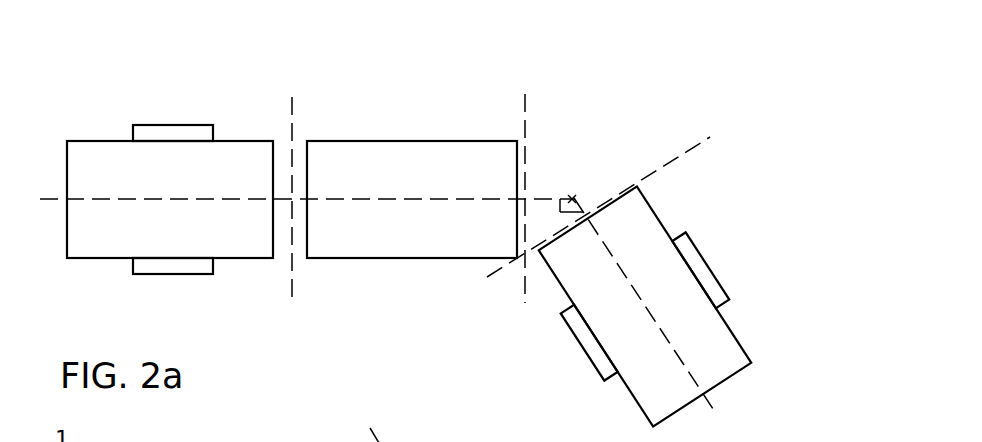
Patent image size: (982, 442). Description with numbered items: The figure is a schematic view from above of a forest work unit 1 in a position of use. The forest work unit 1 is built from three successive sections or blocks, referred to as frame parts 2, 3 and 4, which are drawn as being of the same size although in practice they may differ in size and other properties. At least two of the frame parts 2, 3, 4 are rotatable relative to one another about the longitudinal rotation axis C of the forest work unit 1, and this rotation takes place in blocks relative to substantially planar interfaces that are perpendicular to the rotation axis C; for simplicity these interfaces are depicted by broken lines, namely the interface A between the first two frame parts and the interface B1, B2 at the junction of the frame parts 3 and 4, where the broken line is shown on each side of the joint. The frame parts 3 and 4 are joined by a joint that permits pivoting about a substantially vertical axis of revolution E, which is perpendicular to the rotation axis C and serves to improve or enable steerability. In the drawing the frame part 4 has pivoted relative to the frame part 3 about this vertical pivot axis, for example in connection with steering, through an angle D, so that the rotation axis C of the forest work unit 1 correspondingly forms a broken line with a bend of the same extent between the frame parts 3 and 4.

The forest work unit 1 is at (431, 252).
The frame part 2 is at (170, 165).
The frame part 3 is at (432, 165).
The frame part 4 is at (677, 288).
The interface A is at (291, 186).
The interface B1 is at (524, 185).
The interface B2 is at (618, 196).
The rotation axis C is at (655, 320).
The angle D is at (562, 212).
The axis of revolution E is at (578, 199).